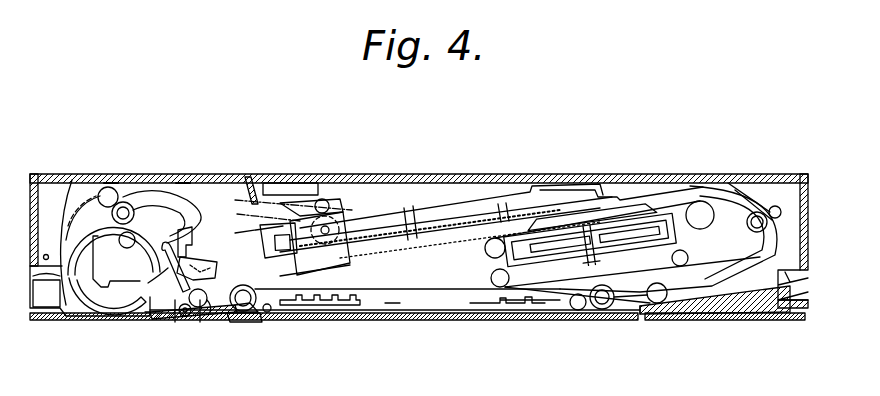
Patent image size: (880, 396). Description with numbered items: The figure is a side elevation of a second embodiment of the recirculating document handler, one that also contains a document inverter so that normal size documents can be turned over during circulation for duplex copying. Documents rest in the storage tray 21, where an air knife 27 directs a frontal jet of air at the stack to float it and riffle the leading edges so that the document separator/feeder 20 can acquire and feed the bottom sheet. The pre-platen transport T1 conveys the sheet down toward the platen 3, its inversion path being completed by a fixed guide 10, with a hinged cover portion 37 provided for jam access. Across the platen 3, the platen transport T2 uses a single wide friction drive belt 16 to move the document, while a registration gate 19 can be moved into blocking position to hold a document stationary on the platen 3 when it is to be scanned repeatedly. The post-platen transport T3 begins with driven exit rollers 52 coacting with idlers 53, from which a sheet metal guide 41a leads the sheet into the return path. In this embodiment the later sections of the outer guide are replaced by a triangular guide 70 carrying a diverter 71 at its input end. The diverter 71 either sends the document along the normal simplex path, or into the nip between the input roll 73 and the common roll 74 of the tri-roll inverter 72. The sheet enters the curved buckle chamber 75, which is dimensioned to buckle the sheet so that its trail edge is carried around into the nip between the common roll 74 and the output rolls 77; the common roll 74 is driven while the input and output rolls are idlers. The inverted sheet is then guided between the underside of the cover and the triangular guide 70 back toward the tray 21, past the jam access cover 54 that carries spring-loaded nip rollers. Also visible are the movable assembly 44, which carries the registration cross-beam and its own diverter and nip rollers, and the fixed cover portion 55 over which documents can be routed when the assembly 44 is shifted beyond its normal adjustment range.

The platen 3 is at (510, 320).
The fixed guide 10 is at (733, 300).
The friction drive belt 16 is at (434, 292).
The registration gate 19 is at (258, 319).
The document separator/feeder 20 is at (573, 212).
The storage tray 21 is at (464, 225).
The air knife 27 is at (658, 182).
The cover portion 37 is at (758, 178).
The sheet metal guide 41a is at (172, 316).
The assembly 44 is at (337, 188).
The exit rollers 52 is at (211, 306).
The idlers 53 is at (178, 323).
The jam access cover 54 is at (182, 176).
The fixed cover portion 55 is at (287, 178).
The triangular guide 70 is at (157, 210).
The diverter 71 is at (167, 237).
The tri-roll inverter 72 is at (111, 172).
The input roll 73 is at (127, 248).
The common roll 74 is at (125, 202).
The curved buckle chamber 75 is at (80, 230).
The output rolls 77 is at (104, 190).
The pre-platen transport T1 is at (788, 192).
The platen transport T2 is at (384, 282).
The post-platen transport T3 is at (205, 193).